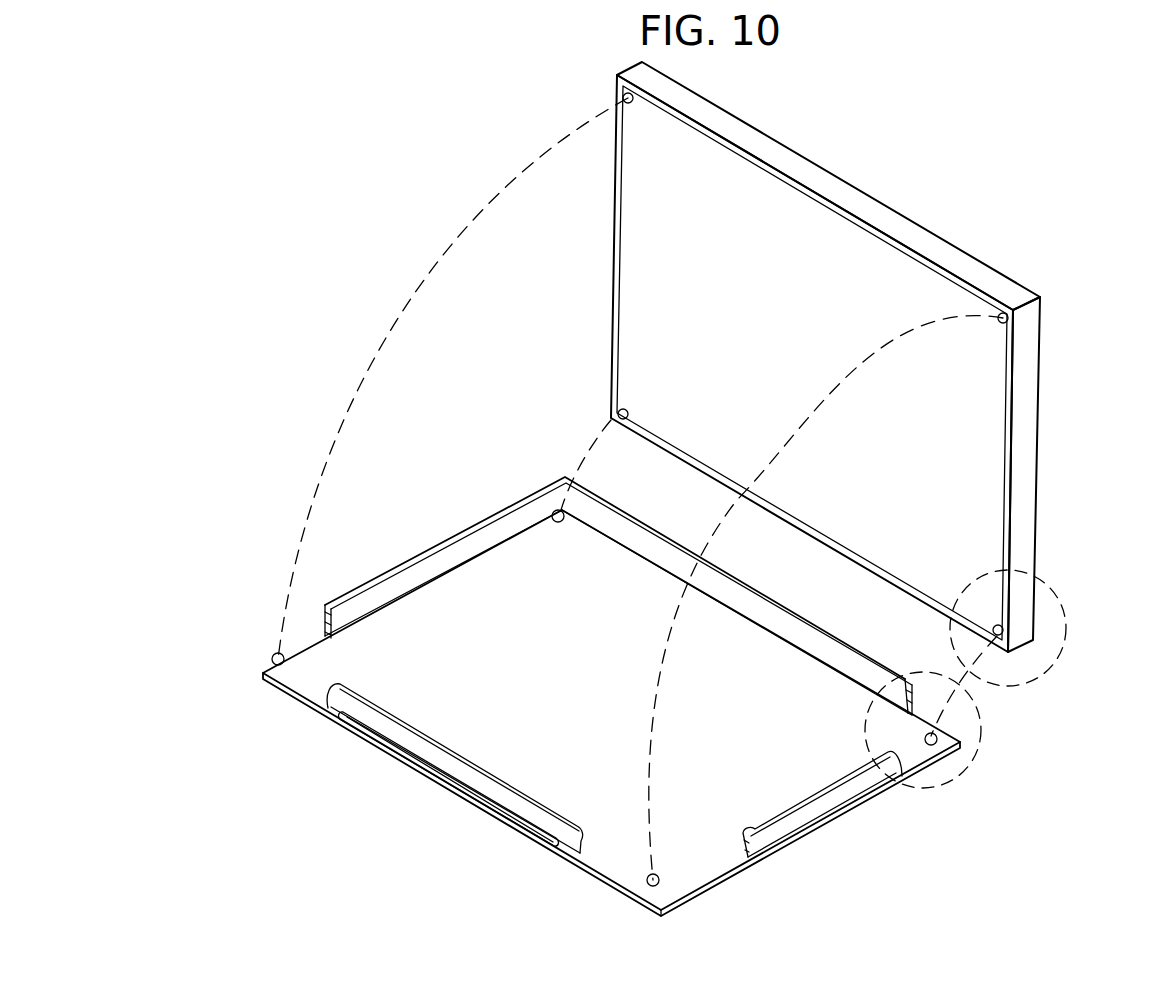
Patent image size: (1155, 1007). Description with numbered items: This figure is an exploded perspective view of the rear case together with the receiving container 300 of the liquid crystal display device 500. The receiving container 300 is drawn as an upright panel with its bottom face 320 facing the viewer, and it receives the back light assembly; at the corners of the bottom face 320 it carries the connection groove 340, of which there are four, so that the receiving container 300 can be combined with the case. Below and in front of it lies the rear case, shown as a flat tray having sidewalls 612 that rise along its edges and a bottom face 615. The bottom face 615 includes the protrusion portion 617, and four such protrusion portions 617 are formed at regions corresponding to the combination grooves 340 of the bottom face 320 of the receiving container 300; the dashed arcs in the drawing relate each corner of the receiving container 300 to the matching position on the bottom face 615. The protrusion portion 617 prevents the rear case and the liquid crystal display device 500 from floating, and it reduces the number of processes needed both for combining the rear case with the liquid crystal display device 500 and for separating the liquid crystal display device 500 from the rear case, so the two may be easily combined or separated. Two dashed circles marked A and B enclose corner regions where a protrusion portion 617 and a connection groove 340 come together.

The receiving container 300 is at (841, 357).
The bottom face 320 is at (694, 153).
The connection groove 340 is at (1012, 322).
The liquid crystal display device 500 is at (1068, 452).
The sidewalls 612 is at (810, 818).
The bottom face 615 is at (314, 680).
The protrusion portion 617 is at (278, 655).
The detail region A is at (965, 768).
The detail region B is at (1050, 667).